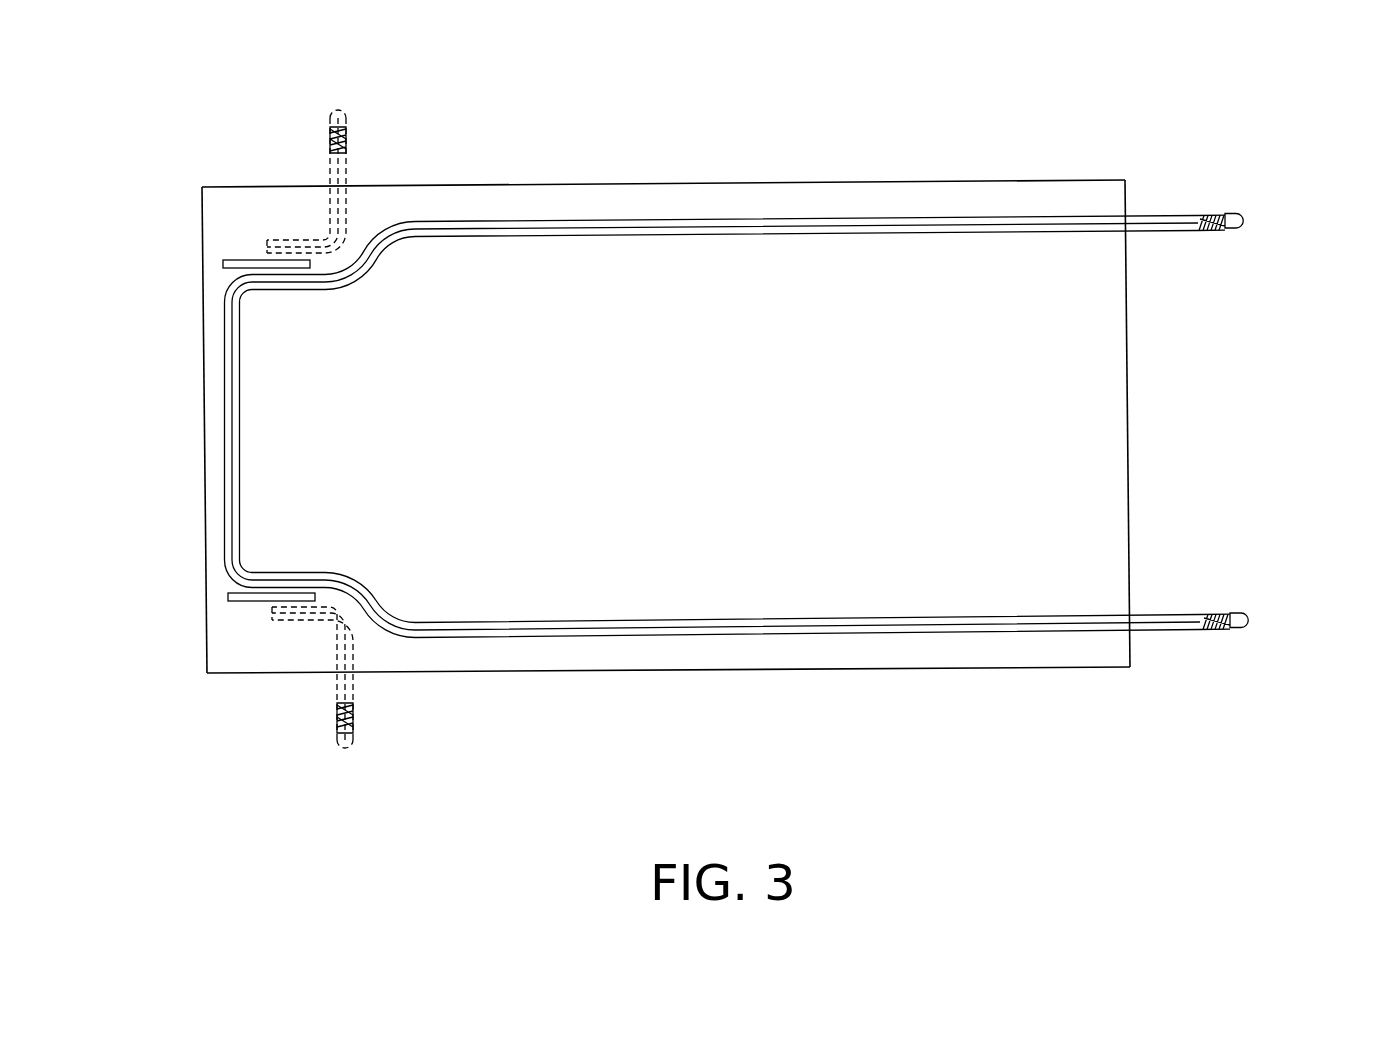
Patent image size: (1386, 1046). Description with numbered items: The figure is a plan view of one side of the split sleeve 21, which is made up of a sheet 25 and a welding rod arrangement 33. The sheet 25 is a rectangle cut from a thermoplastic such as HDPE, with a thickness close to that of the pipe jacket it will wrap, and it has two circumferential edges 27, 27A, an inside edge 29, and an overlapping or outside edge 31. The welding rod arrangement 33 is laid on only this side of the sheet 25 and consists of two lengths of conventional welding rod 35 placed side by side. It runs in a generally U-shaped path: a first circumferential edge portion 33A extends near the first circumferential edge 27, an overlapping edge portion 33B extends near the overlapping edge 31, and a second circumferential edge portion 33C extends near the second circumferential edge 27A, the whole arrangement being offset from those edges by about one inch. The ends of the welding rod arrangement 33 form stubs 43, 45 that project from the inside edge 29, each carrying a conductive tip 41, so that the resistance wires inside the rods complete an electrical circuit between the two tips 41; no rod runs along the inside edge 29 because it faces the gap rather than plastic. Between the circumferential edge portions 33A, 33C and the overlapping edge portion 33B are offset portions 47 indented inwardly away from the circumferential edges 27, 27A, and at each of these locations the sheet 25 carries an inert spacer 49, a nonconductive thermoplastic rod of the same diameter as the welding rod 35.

The split sleeve 21 is at (1008, 178).
The sheet 25 is at (836, 284).
The first circumferential edge 27 is at (483, 183).
The second circumferential edge 27A is at (597, 673).
The inside edge 29 is at (1128, 457).
The overlapping edge 31 is at (204, 430).
The welding rod arrangement 33 is at (677, 215).
The first circumferential edge portion 33A is at (717, 238).
The overlapping edge portion 33B is at (243, 473).
The second circumferential edge portion 33C is at (723, 616).
The welding rod 35 is at (563, 234).
The conductive tip 41 is at (1241, 212).
The stub 43 is at (328, 155).
The stub 45 is at (337, 703).
The offset portion 47 is at (299, 286).
The inert spacer 49 is at (223, 260).